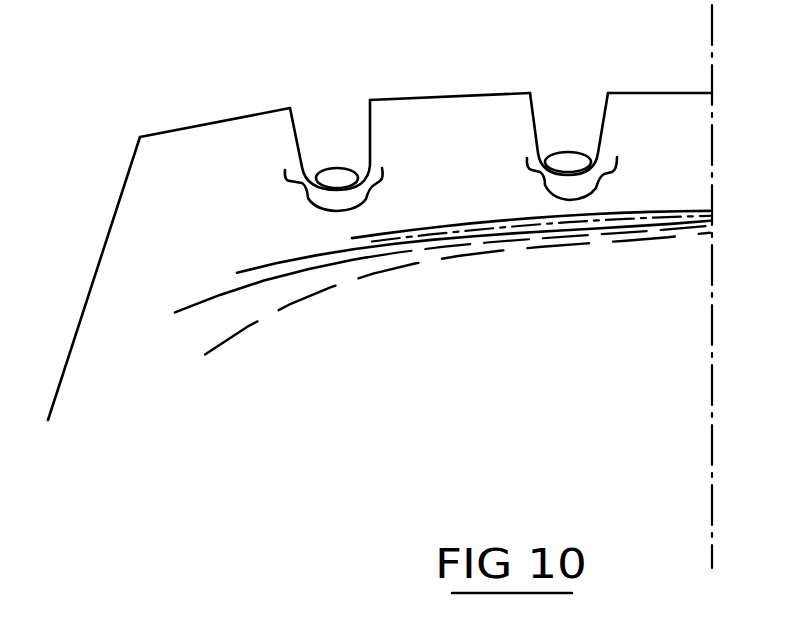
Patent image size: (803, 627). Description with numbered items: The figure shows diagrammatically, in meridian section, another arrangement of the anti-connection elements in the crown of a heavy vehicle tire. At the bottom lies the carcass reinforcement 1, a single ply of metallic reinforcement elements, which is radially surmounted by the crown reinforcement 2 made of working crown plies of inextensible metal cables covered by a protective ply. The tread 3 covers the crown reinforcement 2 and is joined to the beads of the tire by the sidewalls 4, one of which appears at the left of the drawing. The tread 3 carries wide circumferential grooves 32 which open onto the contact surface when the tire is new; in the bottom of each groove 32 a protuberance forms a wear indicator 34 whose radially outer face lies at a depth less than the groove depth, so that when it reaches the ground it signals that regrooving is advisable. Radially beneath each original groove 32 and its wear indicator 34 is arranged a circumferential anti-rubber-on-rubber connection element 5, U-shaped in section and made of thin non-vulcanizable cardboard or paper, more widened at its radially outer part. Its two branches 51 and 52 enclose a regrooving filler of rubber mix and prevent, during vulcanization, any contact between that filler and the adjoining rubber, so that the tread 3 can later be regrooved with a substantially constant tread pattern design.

The carcass reinforcement 1 is at (323, 290).
The crown reinforcement 2 is at (560, 227).
The tread 3 is at (458, 120).
The sidewall 4 is at (143, 358).
The anti-rubber-on-rubber connection element 5 is at (307, 207).
The groove 32 is at (327, 133).
The wear indicator 34 is at (332, 178).
The first branch of anti-connection element 51 is at (533, 180).
The second branch of anti-connection element 52 is at (618, 173).